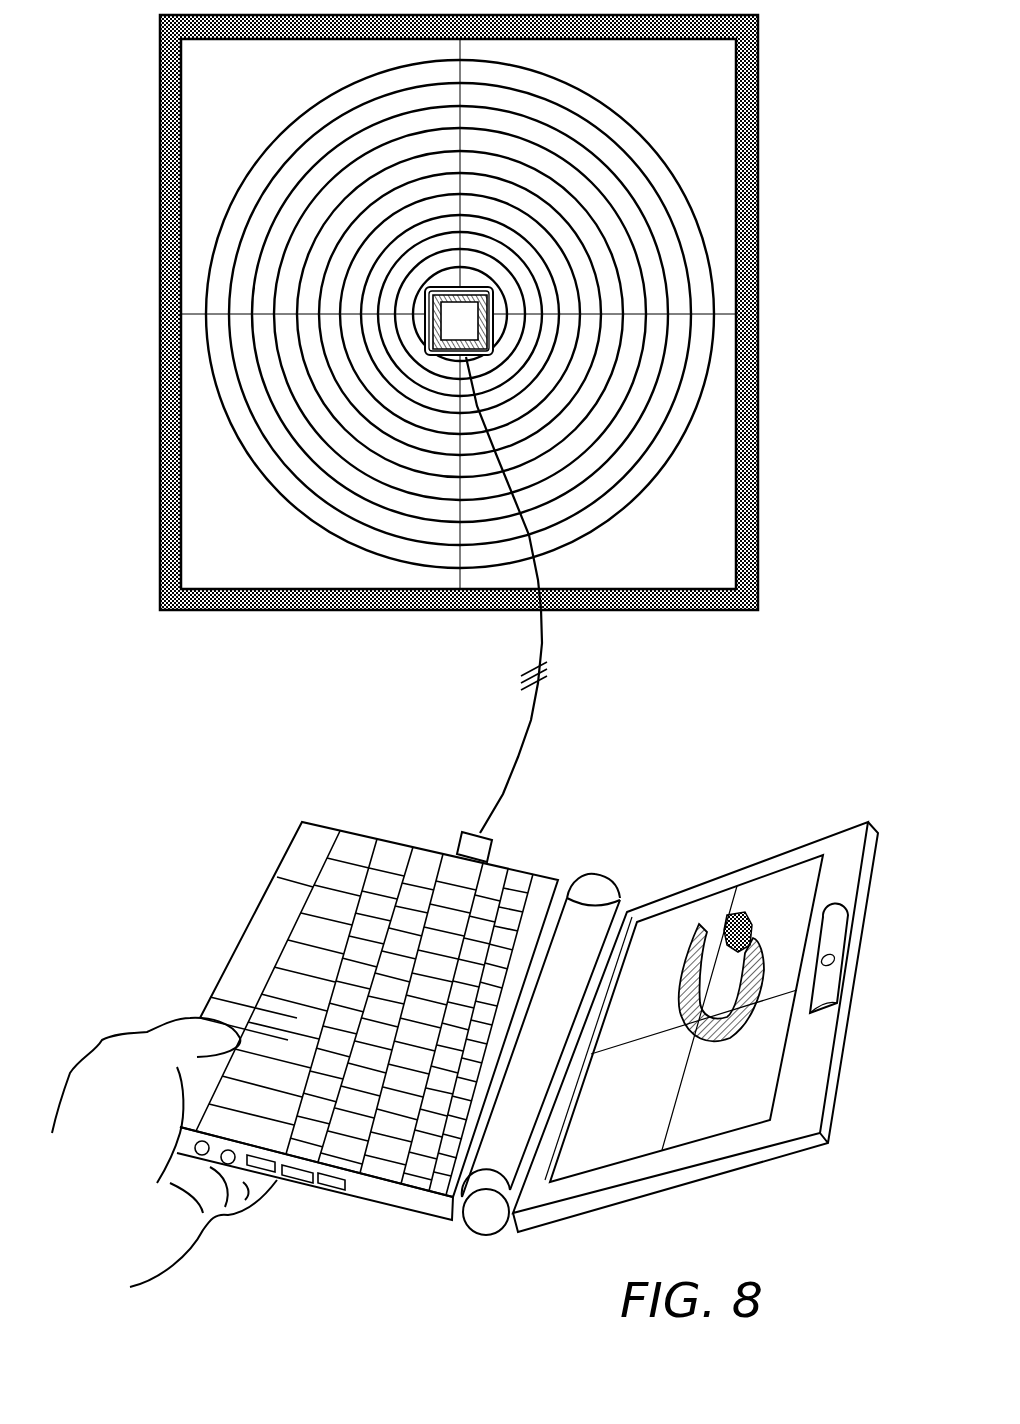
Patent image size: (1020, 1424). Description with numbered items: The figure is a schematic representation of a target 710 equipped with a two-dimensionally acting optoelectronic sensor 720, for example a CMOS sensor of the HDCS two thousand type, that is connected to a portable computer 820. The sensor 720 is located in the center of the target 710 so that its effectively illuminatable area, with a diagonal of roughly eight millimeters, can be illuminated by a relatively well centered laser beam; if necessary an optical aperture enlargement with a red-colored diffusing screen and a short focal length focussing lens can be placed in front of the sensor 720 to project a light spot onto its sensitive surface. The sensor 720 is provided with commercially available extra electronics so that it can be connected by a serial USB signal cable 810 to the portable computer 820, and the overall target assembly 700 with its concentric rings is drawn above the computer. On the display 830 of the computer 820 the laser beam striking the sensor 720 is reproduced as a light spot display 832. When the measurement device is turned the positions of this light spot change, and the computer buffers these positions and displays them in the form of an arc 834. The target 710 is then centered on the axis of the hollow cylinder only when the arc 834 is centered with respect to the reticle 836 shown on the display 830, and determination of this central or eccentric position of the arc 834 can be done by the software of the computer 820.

The sensing pad 700 is at (459, 337).
The target 710 is at (681, 92).
The optoelectronic sensor 720 is at (425, 290).
The serial USB signal cable 810 is at (541, 650).
The portable computer 820 is at (243, 933).
The display 830 is at (695, 1012).
The light spot display 832 is at (740, 903).
The arc 834 is at (690, 945).
The reticle 836 is at (677, 1093).